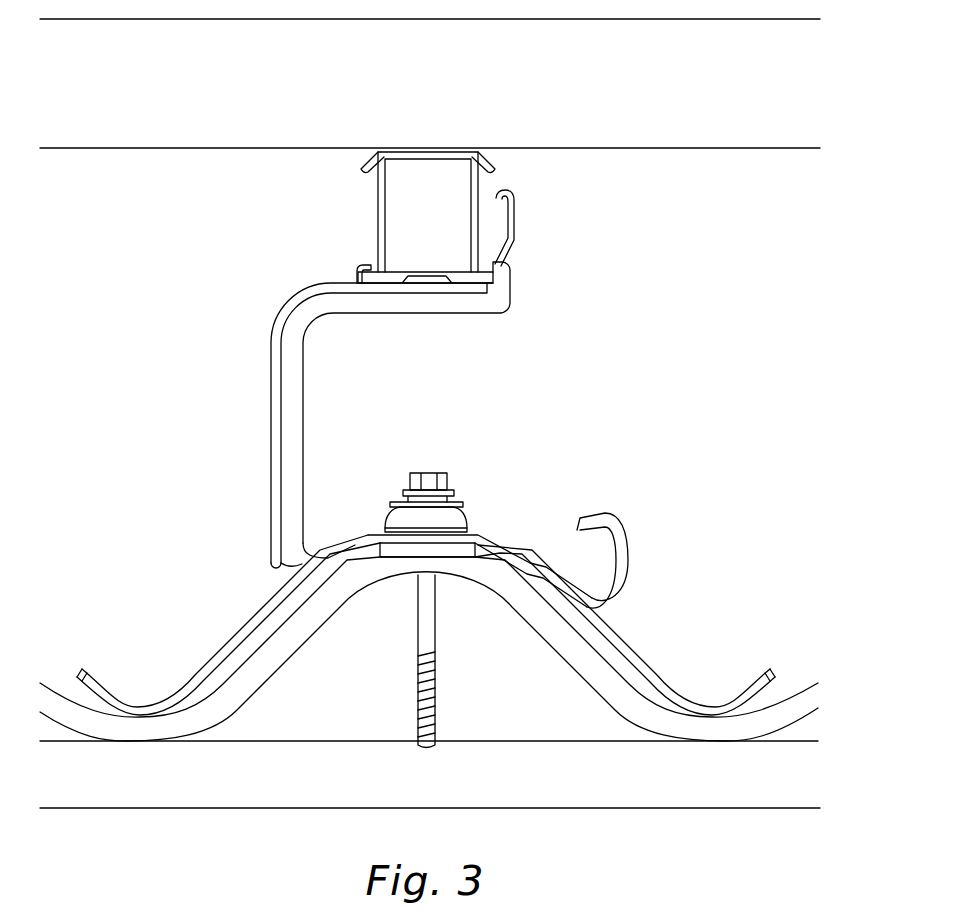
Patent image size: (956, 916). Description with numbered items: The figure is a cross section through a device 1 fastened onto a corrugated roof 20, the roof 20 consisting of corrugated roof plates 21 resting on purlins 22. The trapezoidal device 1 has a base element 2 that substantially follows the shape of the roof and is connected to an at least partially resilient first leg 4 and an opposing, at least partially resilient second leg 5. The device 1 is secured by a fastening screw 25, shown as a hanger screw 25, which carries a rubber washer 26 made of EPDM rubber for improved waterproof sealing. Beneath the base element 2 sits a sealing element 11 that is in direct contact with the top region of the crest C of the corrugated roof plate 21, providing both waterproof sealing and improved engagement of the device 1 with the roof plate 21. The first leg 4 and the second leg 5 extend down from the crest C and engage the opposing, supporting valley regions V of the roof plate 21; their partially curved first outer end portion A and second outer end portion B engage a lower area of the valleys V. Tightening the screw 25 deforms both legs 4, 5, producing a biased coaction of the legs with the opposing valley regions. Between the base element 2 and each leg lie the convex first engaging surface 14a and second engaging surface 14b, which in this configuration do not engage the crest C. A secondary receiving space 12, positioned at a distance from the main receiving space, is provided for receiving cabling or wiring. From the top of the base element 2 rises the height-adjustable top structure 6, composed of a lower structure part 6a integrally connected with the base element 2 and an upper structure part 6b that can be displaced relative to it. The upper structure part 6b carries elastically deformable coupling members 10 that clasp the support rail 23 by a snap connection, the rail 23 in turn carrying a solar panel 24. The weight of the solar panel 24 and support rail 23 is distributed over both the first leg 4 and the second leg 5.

The device 1 is at (664, 488).
The base element 2 is at (480, 530).
The first leg 4 is at (235, 630).
The second leg 5 is at (630, 643).
The top structure 6 is at (257, 433).
The lower structure part 6a is at (310, 548).
The upper structure part 6b is at (422, 303).
The elastically deformable coupling members 10 is at (352, 266).
The sealing element 11 is at (398, 560).
The secondary receiving space 12 is at (585, 548).
The first engaging surface 14a is at (352, 570).
The second engaging surface 14b is at (497, 560).
The corrugated roof 20 is at (820, 667).
The corrugated roof plate 21 is at (583, 660).
The purlins 22 is at (277, 775).
The support rail 23 is at (378, 194).
The solar panel 24 is at (412, 93).
The fastening screw 25 is at (418, 470).
The rubber washer 26 is at (405, 515).
The first outer end portion A is at (140, 685).
The second outer end portion B is at (725, 685).
The crest C is at (437, 562).
The valleys V is at (137, 735).